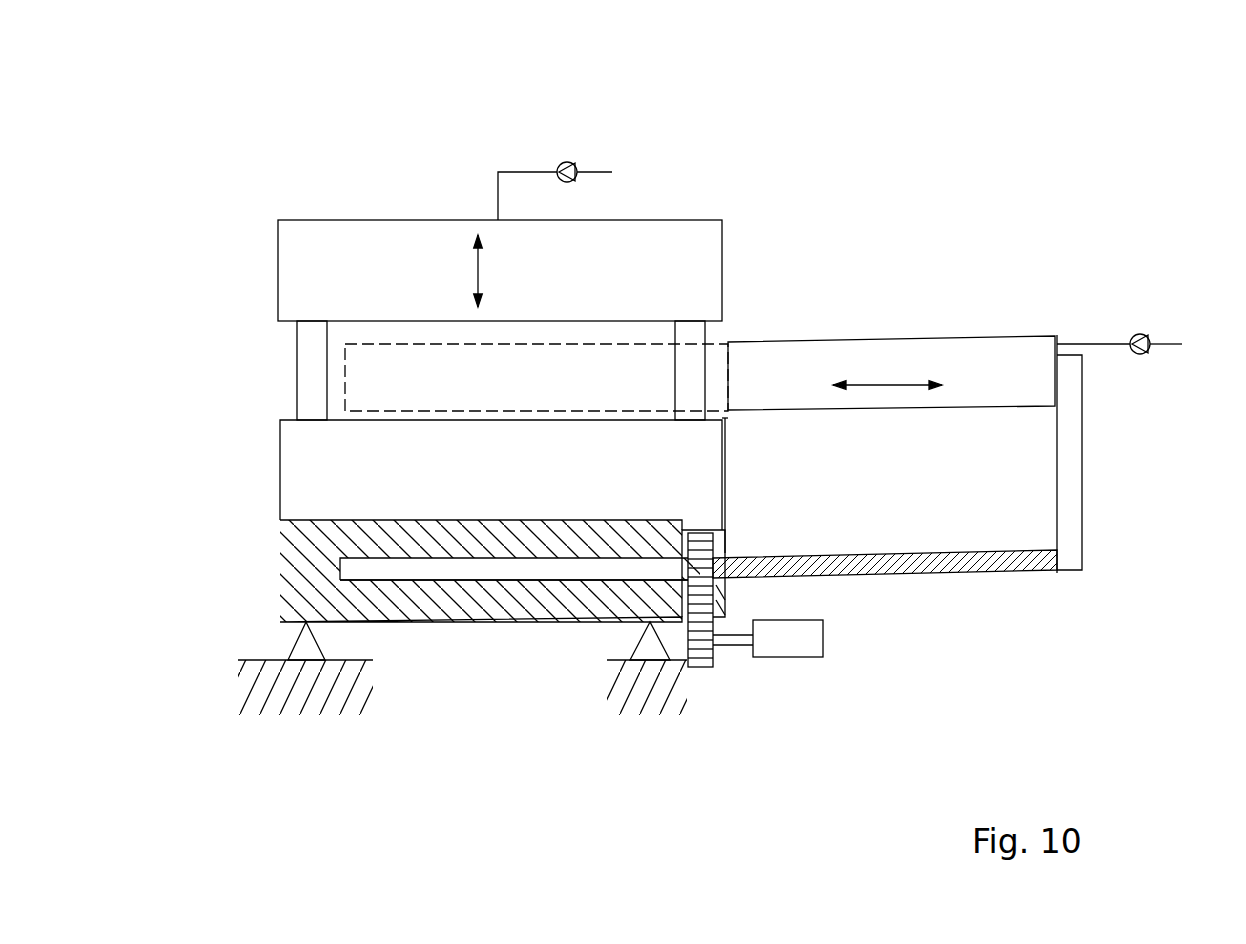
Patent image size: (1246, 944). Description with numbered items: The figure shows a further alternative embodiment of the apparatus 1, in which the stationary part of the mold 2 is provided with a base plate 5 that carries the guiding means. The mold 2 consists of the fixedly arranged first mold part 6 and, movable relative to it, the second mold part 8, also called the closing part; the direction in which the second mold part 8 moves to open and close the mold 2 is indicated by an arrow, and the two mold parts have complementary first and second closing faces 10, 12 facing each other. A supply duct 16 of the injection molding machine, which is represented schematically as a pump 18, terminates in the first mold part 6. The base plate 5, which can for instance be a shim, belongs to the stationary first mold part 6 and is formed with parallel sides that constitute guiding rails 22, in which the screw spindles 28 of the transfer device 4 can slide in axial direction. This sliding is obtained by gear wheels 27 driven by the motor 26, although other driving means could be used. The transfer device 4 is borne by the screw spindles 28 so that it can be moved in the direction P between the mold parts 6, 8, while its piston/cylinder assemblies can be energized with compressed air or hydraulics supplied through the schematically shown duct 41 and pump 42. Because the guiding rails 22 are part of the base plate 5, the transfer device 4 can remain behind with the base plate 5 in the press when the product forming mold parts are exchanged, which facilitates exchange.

The apparatus 1 is at (852, 85).
The mold 2 is at (471, 264).
The transfer device 4 is at (922, 320).
The base plate 5 is at (302, 570).
The first mold part 6 is at (300, 480).
The second mold part 8 is at (727, 247).
The first closing face 10 is at (431, 388).
The second closing face 12 is at (420, 368).
The supply duct 16 is at (532, 172).
The pump 18 is at (573, 160).
The guiding rails 22 is at (512, 570).
The motor 26 is at (788, 657).
The gear wheels 27 is at (708, 543).
The screw spindles 28 is at (960, 575).
The duct 41 is at (1102, 342).
The pump 42 is at (1148, 334).